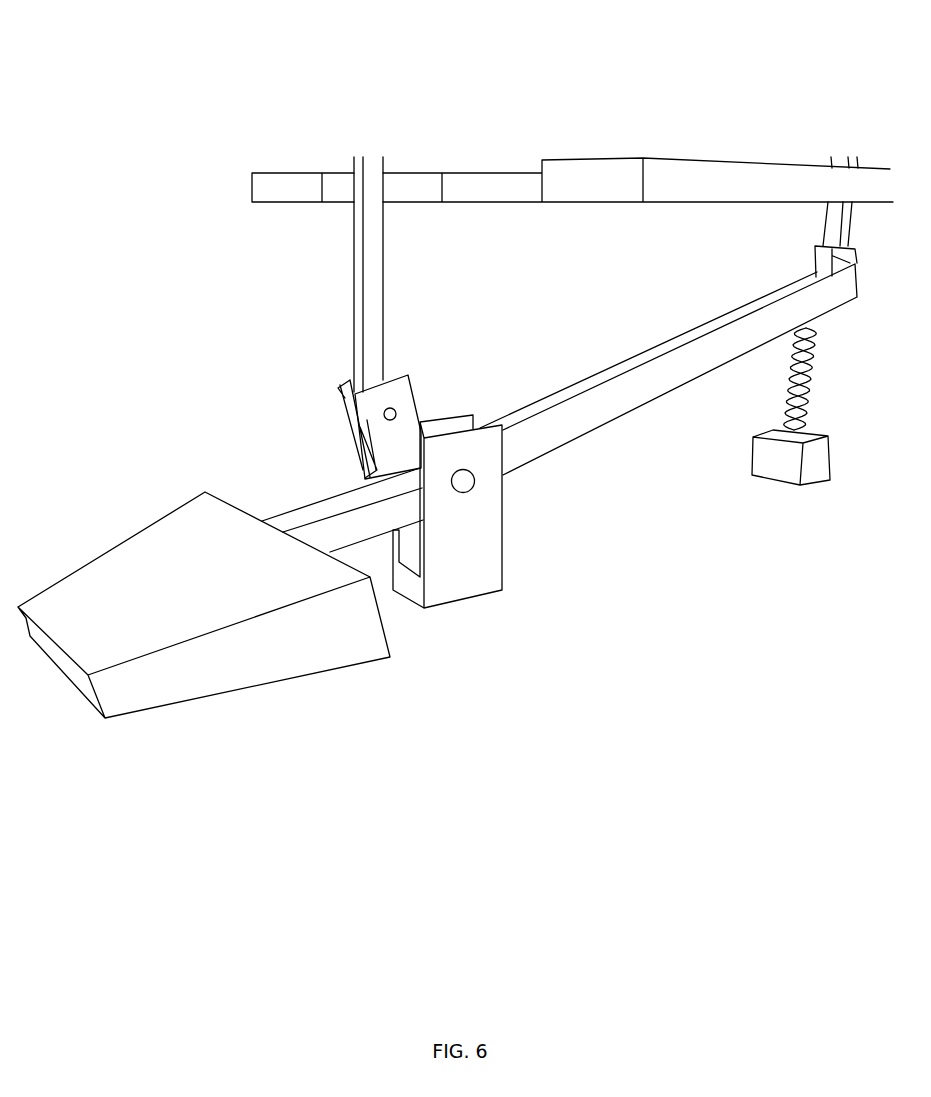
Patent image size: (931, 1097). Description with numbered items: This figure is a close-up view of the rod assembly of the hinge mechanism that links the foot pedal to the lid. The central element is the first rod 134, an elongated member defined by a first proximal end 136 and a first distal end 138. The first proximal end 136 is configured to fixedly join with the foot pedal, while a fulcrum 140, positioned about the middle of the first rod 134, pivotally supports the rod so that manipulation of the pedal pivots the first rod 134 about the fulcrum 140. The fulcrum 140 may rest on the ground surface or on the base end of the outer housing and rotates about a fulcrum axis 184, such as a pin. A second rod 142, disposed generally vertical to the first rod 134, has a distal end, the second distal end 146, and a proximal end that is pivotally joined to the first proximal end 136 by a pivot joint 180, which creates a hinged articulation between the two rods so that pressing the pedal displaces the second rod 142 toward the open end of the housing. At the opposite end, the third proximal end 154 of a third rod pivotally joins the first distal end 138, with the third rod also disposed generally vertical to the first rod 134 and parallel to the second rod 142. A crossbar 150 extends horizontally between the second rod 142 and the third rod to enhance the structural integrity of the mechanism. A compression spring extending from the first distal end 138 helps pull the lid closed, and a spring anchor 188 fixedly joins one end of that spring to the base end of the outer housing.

The first rod 134 is at (623, 377).
The first proximal end 136 is at (323, 512).
The first distal end 138 is at (825, 315).
The fulcrum 140 is at (457, 588).
The second rod 142 is at (368, 193).
The second distal end 146 is at (243, 672).
The crossbar 150 is at (323, 175).
The third proximal end 154 is at (837, 227).
The pivot joint 180 is at (345, 390).
The fulcrum axis 184 is at (463, 482).
The spring anchor 188 is at (780, 470).